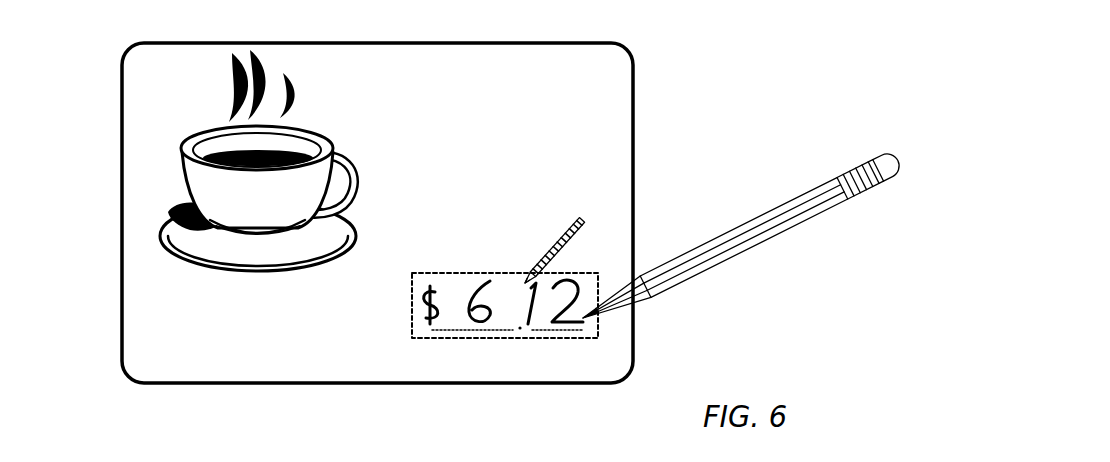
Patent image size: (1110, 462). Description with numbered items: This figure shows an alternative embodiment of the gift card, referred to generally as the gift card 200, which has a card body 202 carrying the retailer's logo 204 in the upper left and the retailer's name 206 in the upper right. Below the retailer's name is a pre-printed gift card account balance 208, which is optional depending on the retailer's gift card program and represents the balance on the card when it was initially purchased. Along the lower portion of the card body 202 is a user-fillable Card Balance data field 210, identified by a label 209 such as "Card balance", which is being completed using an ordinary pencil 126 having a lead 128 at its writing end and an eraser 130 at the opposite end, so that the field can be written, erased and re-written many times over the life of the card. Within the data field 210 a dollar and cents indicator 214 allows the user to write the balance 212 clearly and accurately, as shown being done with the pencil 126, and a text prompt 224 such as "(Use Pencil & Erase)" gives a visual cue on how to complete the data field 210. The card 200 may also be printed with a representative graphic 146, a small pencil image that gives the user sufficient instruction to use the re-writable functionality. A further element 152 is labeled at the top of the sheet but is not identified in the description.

The gift card 200 is at (384, 229).
The card body 202 is at (128, 377).
The retailer's logo 204 is at (240, 122).
The retailer's name 206 is at (593, 103).
The pre-printed gift card account balance 208 is at (550, 197).
The label 209 is at (283, 328).
The Card Balance data field 210 is at (569, 333).
The balance 212 is at (571, 323).
The dollar and cents indicator 214 is at (470, 346).
The text prompt 224 is at (462, 331).
The pencil 126 is at (776, 268).
The lead 128 is at (614, 302).
The eraser 130 is at (897, 185).
The representative graphic 146 is at (582, 223).
The display surface 152 is at (622, 0).